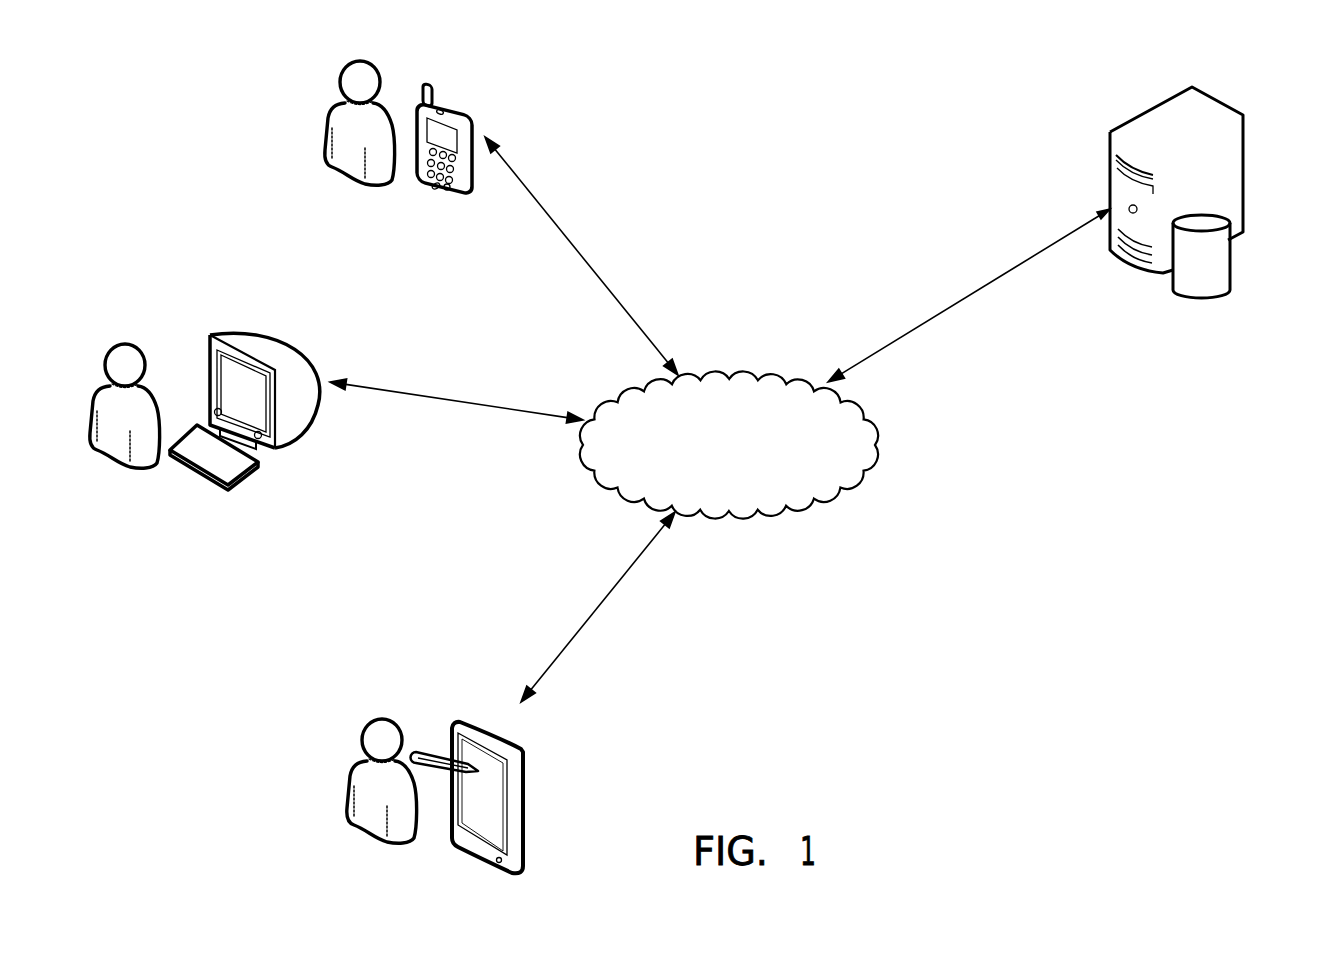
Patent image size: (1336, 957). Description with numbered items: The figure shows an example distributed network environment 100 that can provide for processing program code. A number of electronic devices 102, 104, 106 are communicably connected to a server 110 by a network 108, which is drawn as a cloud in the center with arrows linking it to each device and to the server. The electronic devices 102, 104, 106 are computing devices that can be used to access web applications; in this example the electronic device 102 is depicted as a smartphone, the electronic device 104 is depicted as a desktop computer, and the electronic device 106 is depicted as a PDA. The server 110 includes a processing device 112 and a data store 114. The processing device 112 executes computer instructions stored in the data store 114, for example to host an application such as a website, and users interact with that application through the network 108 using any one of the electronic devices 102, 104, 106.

The network environment 100 is at (862, 93).
The electronic device 102 is at (455, 108).
The electronic device 104 is at (290, 350).
The electronic device 106 is at (523, 750).
The network 108 is at (728, 371).
The server 110 is at (1184, 210).
The processing device 112 is at (1222, 100).
The data store 114 is at (1230, 292).